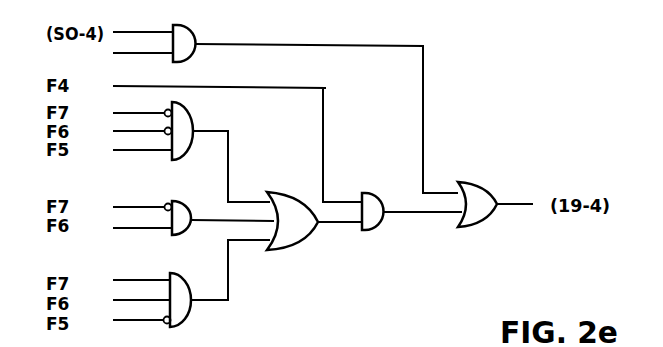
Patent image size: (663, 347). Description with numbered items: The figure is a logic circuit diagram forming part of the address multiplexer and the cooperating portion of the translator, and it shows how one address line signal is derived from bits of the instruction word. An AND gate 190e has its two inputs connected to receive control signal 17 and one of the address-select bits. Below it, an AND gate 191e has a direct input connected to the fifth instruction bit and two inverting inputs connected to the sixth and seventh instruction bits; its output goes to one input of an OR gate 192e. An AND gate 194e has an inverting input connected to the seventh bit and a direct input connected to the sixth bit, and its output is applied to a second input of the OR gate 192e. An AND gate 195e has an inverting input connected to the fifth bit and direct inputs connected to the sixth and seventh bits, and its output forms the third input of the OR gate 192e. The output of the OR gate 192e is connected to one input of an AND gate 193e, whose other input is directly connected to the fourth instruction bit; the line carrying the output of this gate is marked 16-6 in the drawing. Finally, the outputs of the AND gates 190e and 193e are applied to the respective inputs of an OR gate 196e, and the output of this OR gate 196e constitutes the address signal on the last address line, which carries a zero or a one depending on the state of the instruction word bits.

The AND gate 190e is at (190, 28).
The AND gate 191e is at (188, 122).
The OR gate 192e is at (287, 208).
The AND gate 193e is at (373, 202).
The AND gate 194e is at (183, 212).
The AND gate 195e is at (183, 307).
The OR gate 196e is at (477, 193).
The control signal 17 is at (109, 56).
The signal line 16-6 is at (423, 223).